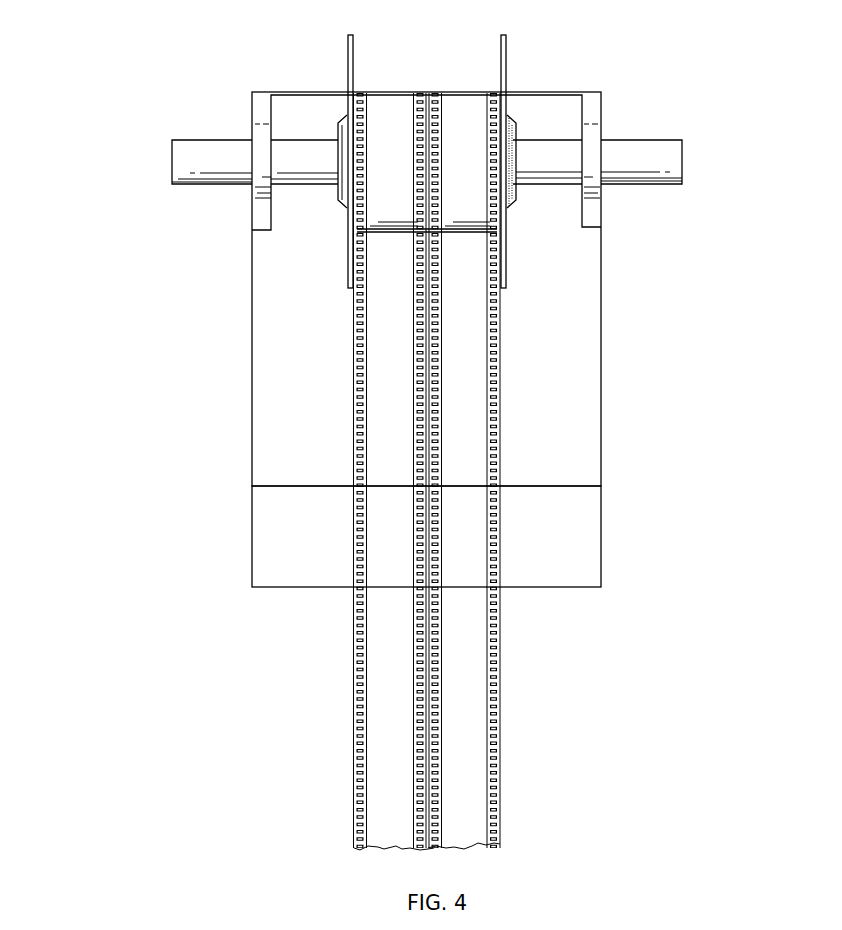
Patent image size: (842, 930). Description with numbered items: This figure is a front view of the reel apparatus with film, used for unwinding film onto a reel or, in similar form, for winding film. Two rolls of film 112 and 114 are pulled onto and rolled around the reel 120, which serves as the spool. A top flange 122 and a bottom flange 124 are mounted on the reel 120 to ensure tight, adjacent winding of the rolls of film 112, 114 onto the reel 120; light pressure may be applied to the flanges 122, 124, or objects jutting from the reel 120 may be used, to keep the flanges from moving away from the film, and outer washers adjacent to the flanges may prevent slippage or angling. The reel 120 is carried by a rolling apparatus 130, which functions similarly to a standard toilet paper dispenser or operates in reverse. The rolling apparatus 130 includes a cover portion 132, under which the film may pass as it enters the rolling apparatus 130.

The roll of film 112 is at (397, 712).
The roll of film 114 is at (472, 733).
The reel 120 is at (673, 168).
The top flange 122 is at (352, 170).
The bottom flange 124 is at (503, 188).
The rolling apparatus 130 is at (257, 413).
The cover portion 132 is at (267, 530).